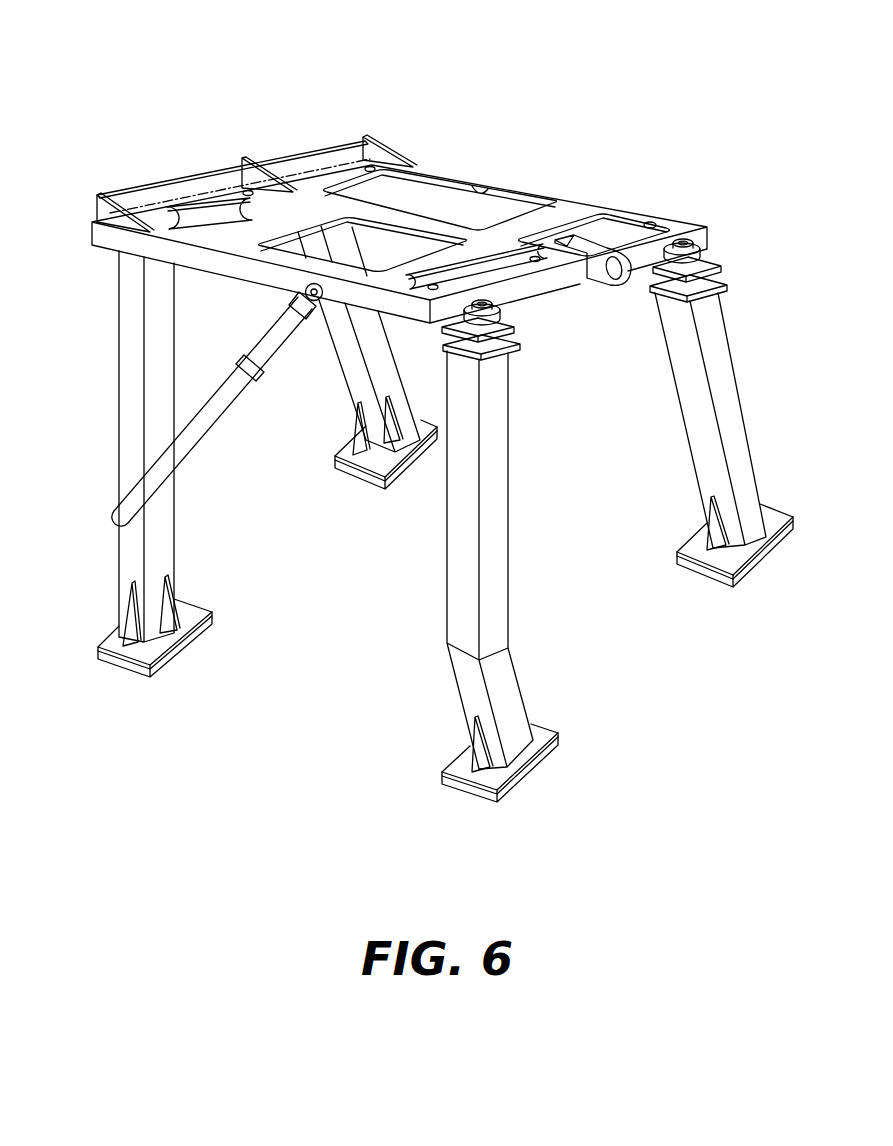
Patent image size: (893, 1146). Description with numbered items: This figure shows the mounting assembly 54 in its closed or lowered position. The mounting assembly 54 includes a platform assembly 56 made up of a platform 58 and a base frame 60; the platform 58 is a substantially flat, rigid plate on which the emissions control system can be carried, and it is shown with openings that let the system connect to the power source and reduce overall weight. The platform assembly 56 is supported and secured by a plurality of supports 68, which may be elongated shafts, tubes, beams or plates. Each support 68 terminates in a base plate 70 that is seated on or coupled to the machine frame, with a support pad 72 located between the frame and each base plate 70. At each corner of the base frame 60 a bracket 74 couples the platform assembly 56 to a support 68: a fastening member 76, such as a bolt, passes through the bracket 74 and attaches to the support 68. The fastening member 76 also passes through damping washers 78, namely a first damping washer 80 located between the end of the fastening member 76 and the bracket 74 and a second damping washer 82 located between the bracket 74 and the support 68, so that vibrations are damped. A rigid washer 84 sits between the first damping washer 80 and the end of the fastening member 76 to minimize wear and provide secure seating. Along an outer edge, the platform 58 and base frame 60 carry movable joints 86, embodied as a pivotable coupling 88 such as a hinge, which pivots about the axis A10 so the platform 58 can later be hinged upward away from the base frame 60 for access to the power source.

The mounting assembly 54 is at (278, 79).
The platform assembly 56 is at (74, 246).
The platform 58 is at (580, 203).
The base frame 60 is at (480, 193).
The support 68 is at (128, 421).
The base plate 70 is at (157, 643).
The support pad 72 is at (100, 667).
The bracket 74 is at (521, 340).
The fastening member 76 is at (480, 300).
The damping washer 78 is at (520, 350).
The first damping washer 80 is at (443, 342).
The second damping washer 82 is at (493, 341).
The rigid washer 84 is at (500, 306).
The movable joint 86 is at (245, 158).
The pivotable coupling 88 is at (93, 218).
The axis A10 is at (92, 220).